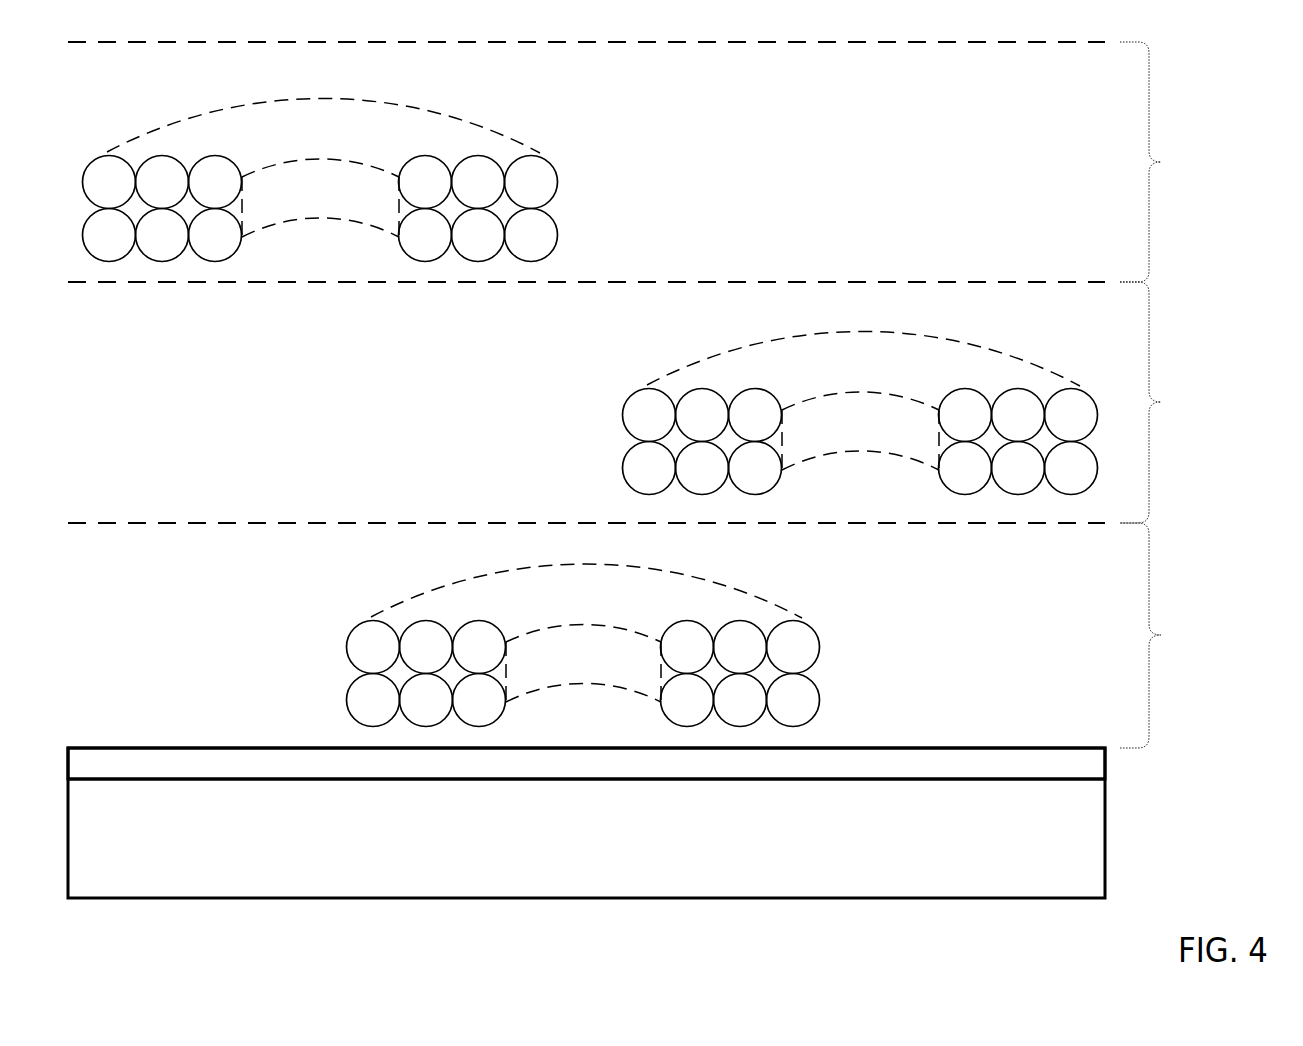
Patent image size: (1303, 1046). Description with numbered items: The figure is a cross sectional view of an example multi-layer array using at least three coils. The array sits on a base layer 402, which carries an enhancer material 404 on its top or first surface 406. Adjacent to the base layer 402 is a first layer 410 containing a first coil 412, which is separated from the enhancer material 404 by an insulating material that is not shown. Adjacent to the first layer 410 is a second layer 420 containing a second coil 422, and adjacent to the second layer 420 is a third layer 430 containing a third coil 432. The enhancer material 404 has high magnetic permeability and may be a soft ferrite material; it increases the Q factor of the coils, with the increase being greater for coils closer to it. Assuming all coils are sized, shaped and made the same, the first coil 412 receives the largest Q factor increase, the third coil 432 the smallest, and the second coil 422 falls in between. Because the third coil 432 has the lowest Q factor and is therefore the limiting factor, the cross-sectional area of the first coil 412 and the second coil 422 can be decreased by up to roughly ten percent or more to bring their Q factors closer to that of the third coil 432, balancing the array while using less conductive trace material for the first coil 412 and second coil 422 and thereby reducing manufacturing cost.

The base layer 402 is at (1106, 826).
The enhancer material 404 is at (1090, 762).
The top surface 406 is at (1106, 783).
The first layer 410 is at (1175, 635).
The first coil 412 is at (820, 640).
The second layer 420 is at (1175, 402).
The second coil 422 is at (626, 410).
The third layer 430 is at (1175, 162).
The third coil 432 is at (558, 181).